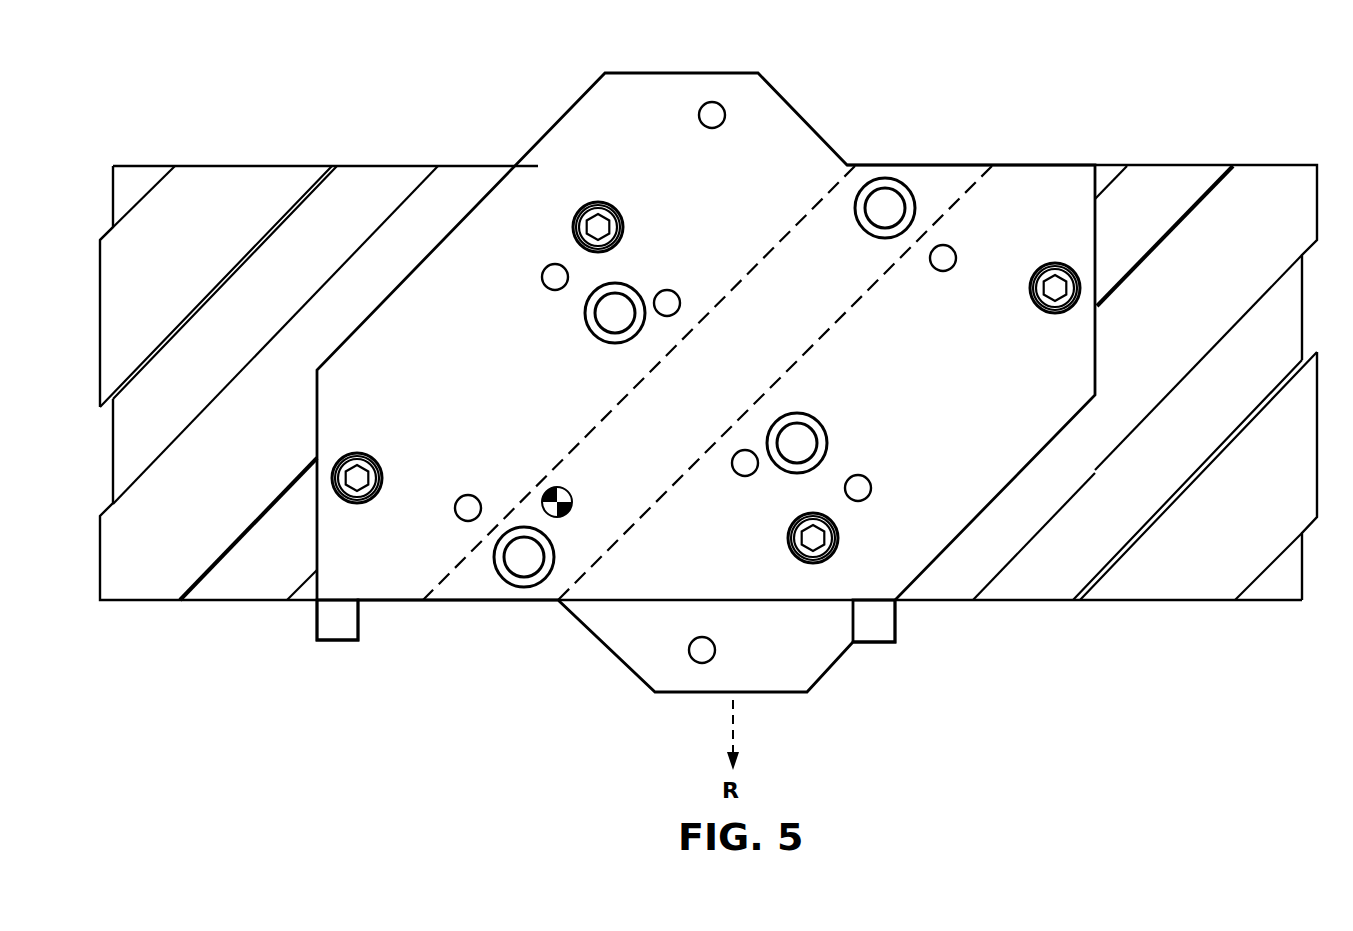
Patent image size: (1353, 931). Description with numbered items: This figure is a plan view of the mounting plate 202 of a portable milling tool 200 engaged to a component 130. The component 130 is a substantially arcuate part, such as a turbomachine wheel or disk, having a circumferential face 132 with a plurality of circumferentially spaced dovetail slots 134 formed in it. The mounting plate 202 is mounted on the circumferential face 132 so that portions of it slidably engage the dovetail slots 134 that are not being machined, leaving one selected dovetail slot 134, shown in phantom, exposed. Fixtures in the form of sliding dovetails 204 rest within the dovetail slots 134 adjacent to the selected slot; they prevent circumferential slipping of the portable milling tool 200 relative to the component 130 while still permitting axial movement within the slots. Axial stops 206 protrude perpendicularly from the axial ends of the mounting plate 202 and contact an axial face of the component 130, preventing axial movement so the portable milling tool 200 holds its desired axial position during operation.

The component 130 is at (170, 602).
The circumferential face 132 is at (218, 190).
The dovetail slots 134 is at (368, 185).
The portable milling tool 200 is at (542, 122).
The mounting plate 202 is at (765, 112).
The sliding dovetails 204 is at (308, 472).
The axial stops 206 is at (327, 630).